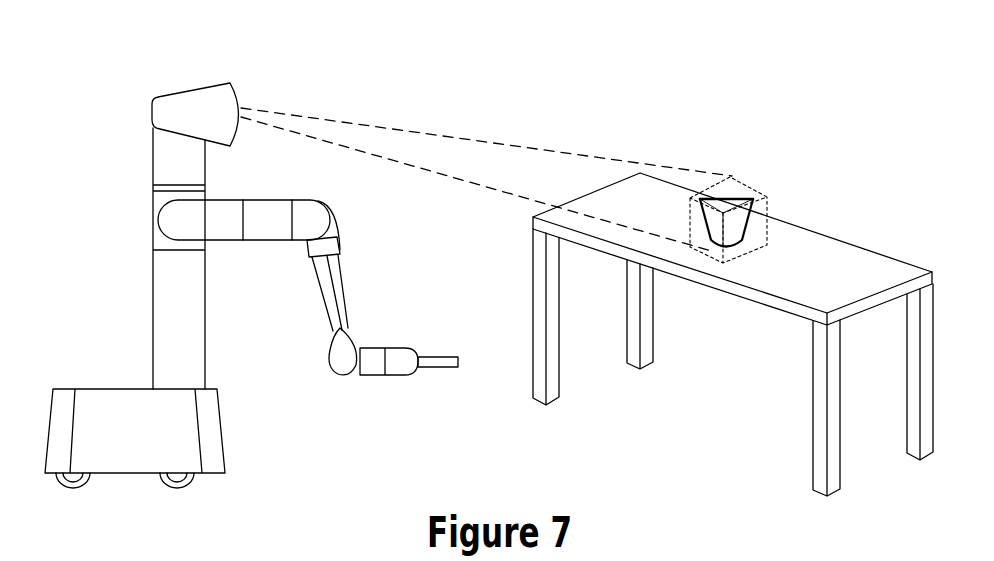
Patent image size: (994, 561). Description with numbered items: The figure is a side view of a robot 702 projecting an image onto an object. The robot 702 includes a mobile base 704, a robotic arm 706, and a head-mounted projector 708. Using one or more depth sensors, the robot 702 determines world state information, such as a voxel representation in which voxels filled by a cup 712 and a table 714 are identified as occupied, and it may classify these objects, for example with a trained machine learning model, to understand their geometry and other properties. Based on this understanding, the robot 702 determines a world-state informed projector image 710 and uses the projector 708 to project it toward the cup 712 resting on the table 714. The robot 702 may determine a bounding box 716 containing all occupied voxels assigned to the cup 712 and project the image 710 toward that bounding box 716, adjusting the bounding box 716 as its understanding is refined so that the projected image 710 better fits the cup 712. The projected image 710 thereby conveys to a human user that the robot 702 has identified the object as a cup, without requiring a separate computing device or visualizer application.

The robot 702 is at (237, 261).
The mobile base 704 is at (104, 406).
The robotic arm 706 is at (302, 252).
The projector 708 is at (206, 111).
The world-state informed projector image 710 is at (455, 145).
The cup 712 is at (743, 198).
The table 714 is at (855, 268).
The bounding box 716 is at (767, 218).